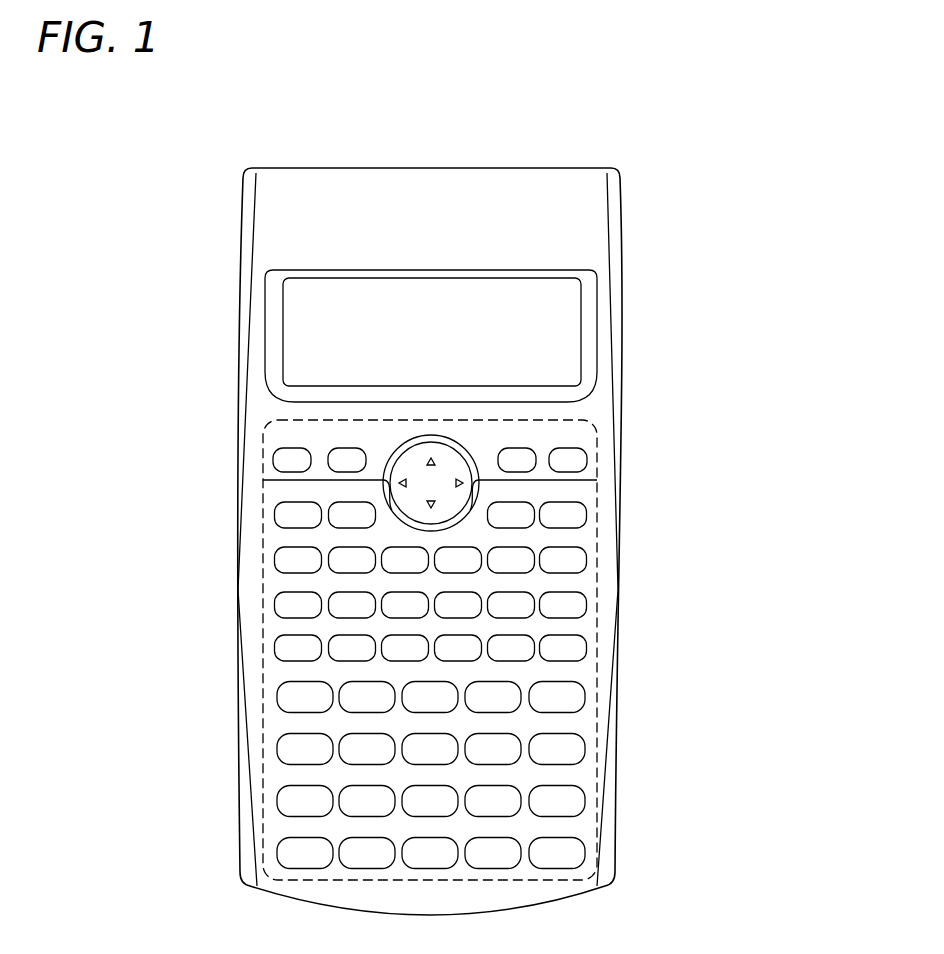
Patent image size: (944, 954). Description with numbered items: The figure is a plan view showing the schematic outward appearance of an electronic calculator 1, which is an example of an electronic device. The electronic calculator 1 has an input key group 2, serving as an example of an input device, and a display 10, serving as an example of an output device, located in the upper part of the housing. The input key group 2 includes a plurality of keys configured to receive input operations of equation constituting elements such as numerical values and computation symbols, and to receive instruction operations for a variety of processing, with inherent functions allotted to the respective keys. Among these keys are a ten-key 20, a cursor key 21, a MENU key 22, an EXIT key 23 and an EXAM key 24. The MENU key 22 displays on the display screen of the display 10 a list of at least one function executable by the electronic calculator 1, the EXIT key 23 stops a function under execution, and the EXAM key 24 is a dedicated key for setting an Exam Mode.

The electronic calculator 1 is at (222, 226).
The input key group 2 is at (600, 603).
The display 10 is at (583, 330).
The ten-key 20 is at (284, 745).
The cursor key 21 is at (413, 507).
The MENU key 22 is at (523, 468).
The EXIT key 23 is at (283, 641).
The EXAM key 24 is at (345, 468).